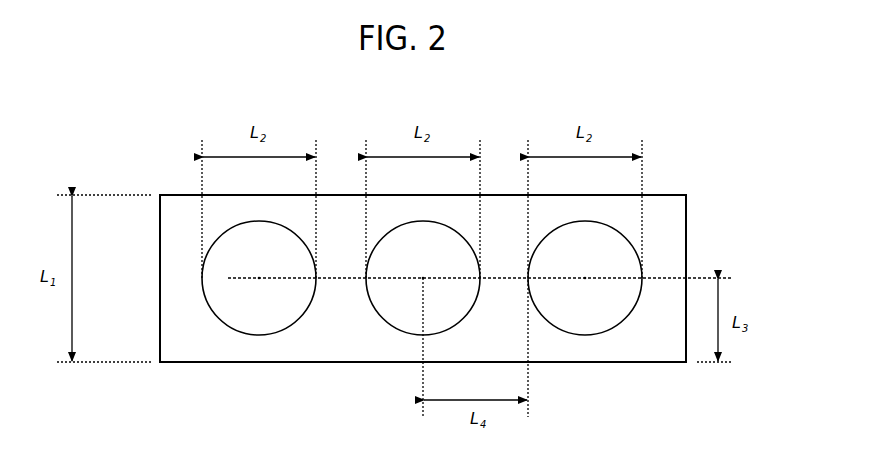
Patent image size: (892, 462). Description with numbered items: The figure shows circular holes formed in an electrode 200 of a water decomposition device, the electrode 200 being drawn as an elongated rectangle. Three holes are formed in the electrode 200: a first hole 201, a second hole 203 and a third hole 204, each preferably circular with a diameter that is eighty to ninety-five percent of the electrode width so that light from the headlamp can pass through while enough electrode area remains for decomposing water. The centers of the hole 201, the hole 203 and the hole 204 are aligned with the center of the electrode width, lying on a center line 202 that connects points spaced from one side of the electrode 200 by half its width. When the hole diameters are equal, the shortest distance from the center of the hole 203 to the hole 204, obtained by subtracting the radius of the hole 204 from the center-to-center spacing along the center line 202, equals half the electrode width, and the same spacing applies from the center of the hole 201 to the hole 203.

The electrode 200 is at (338, 193).
The hole 201 is at (259, 335).
The center line 202 is at (697, 278).
The hole 203 is at (395, 328).
The hole 204 is at (585, 335).